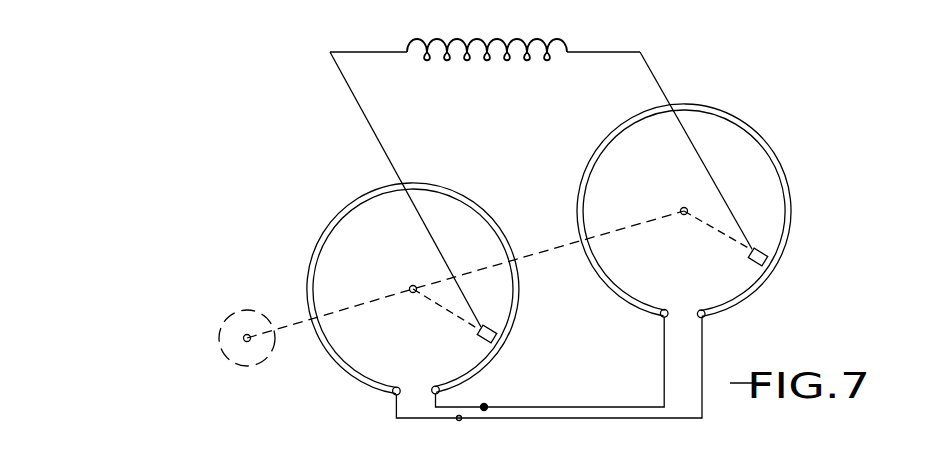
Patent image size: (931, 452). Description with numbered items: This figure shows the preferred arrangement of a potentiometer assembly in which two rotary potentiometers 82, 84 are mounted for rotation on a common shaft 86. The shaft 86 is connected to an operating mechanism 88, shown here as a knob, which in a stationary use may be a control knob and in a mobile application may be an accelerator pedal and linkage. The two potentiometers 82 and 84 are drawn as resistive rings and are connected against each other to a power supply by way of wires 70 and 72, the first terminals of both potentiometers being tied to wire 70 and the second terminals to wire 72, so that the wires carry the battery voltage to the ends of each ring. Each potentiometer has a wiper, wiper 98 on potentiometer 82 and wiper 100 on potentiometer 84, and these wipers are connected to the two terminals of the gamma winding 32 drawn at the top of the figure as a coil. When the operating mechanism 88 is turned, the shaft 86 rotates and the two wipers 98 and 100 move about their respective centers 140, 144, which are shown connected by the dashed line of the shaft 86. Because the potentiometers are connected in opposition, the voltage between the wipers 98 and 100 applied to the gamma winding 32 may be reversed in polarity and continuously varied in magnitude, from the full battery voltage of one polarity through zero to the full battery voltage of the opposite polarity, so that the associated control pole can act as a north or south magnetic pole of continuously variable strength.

The gamma winding 32 is at (566, 48).
The wire 70 is at (459, 420).
The wire 72 is at (484, 407).
The potentiometer 82 is at (748, 120).
The potentiometer 84 is at (356, 204).
The common shaft 86 is at (285, 327).
The operating mechanism 88 is at (245, 318).
The wiper 98 is at (768, 252).
The wiper 100 is at (494, 330).
The center 140 is at (684, 216).
The center 144 is at (410, 285).